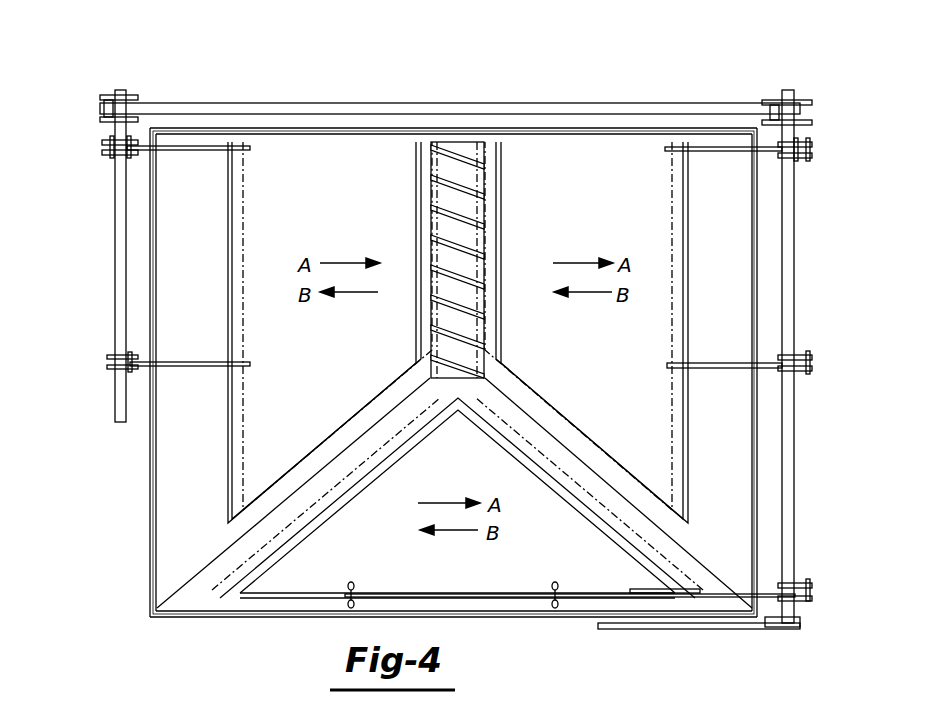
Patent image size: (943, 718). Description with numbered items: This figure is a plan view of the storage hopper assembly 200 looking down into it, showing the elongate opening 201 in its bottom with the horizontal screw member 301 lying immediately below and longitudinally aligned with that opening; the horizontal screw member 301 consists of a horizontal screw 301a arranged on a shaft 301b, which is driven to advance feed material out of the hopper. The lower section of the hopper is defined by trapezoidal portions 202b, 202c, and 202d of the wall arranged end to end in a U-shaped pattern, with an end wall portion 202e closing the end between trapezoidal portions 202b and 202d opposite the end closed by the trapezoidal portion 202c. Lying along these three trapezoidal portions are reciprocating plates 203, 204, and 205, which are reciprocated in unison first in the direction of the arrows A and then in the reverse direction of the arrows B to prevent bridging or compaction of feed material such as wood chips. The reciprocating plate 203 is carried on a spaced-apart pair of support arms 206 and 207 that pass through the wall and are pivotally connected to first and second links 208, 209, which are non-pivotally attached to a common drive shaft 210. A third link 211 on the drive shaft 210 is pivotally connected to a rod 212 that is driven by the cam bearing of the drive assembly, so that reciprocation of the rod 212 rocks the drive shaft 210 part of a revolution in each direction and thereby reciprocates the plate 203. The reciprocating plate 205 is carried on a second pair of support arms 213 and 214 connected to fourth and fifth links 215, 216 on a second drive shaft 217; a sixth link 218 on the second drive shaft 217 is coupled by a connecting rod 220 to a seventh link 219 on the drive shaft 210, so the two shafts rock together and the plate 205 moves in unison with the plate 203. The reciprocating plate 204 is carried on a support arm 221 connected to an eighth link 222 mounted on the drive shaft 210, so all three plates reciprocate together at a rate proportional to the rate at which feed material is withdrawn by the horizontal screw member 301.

The storage hopper assembly 200 is at (810, 86).
The elongate opening 201 is at (558, 104).
The trapezoidal portion 202b is at (732, 461).
The trapezoidal portion 202c is at (202, 598).
The trapezoidal portion 202d is at (152, 552).
The end wall portion 202e is at (648, 142).
The reciprocating plate 203 is at (612, 217).
The reciprocating plate 204 is at (462, 574).
The reciprocating plate 205 is at (335, 217).
The support arm 206 is at (716, 370).
The support arm 207 is at (742, 185).
The first link 208 is at (800, 357).
The second link 209 is at (798, 170).
The drive shaft 210 is at (796, 270).
The third link 211 is at (784, 628).
The rod 212 is at (745, 630).
The support arm 213 is at (180, 367).
The support arm 214 is at (182, 151).
The fourth link 215 is at (112, 400).
The fifth link 216 is at (110, 150).
The second drive shaft 217 is at (114, 200).
The sixth link 218 is at (98, 92).
The seventh link 219 is at (790, 90).
The connecting rod 220 is at (235, 103).
The support arm 221 is at (700, 596).
The eighth link 222 is at (812, 596).
The horizontal screw member 301 is at (470, 145).
The horizontal screw 301a is at (432, 158).
The shaft 301b is at (455, 142).